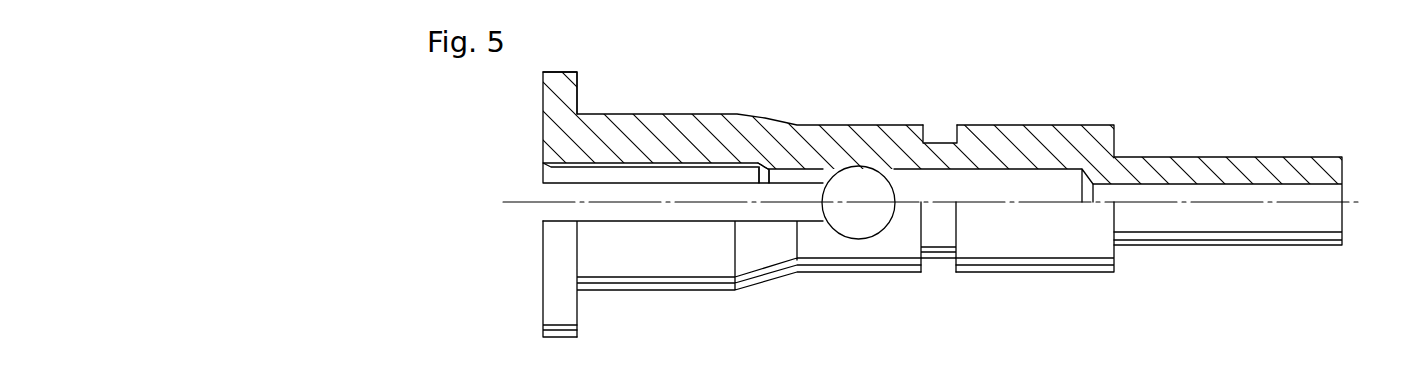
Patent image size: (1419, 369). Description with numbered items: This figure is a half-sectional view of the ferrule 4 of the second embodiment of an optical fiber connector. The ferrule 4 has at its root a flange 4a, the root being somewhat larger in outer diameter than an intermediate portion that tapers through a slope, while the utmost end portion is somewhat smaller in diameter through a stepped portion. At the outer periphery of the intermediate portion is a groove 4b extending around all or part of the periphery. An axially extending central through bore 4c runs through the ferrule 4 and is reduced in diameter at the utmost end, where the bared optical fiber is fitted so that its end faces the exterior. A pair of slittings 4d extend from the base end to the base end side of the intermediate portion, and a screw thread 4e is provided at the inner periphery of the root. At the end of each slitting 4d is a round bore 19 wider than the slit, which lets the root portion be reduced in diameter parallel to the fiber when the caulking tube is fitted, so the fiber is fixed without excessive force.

The ferrule 4 is at (1043, 125).
The flange 4a is at (556, 83).
The groove 4b is at (941, 141).
The through bore 4c is at (1327, 196).
The slittings 4d is at (758, 213).
The screw thread 4e is at (597, 165).
The round bore 19 is at (854, 224).